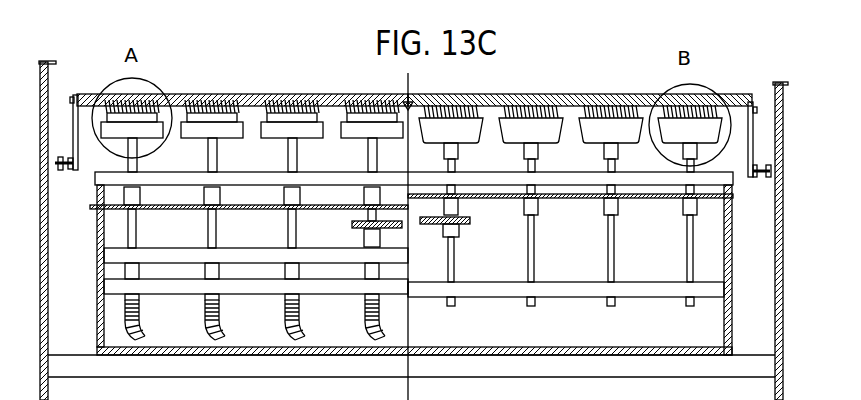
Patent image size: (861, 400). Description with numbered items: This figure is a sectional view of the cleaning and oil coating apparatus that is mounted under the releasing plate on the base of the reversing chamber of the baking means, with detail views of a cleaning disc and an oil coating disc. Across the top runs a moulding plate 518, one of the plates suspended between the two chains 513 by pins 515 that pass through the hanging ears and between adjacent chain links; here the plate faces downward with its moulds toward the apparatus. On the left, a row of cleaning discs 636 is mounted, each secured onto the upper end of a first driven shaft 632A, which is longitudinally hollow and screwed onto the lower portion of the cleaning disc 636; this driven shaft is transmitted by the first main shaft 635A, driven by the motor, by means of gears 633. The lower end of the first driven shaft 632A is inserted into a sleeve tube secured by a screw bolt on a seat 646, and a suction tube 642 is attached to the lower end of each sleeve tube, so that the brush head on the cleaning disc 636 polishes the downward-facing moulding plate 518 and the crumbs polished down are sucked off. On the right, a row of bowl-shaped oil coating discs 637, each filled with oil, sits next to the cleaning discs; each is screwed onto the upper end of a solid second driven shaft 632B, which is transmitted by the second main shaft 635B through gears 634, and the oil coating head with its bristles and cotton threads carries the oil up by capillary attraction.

The moulding plate 518 is at (490, 100).
The pin 515 is at (80, 173).
The chain 513 is at (767, 178).
The cleaning disc 636 is at (220, 133).
The first driven shaft 632A is at (372, 152).
The oil coating disc 637 is at (460, 132).
The first main shaft 635A is at (212, 223).
The gears 633 is at (357, 212).
The second driven shaft 632B is at (452, 262).
The gears 634 is at (594, 200).
The second main shaft 635B is at (637, 258).
The suction tube 642 is at (136, 322).
The seat 646 is at (252, 288).